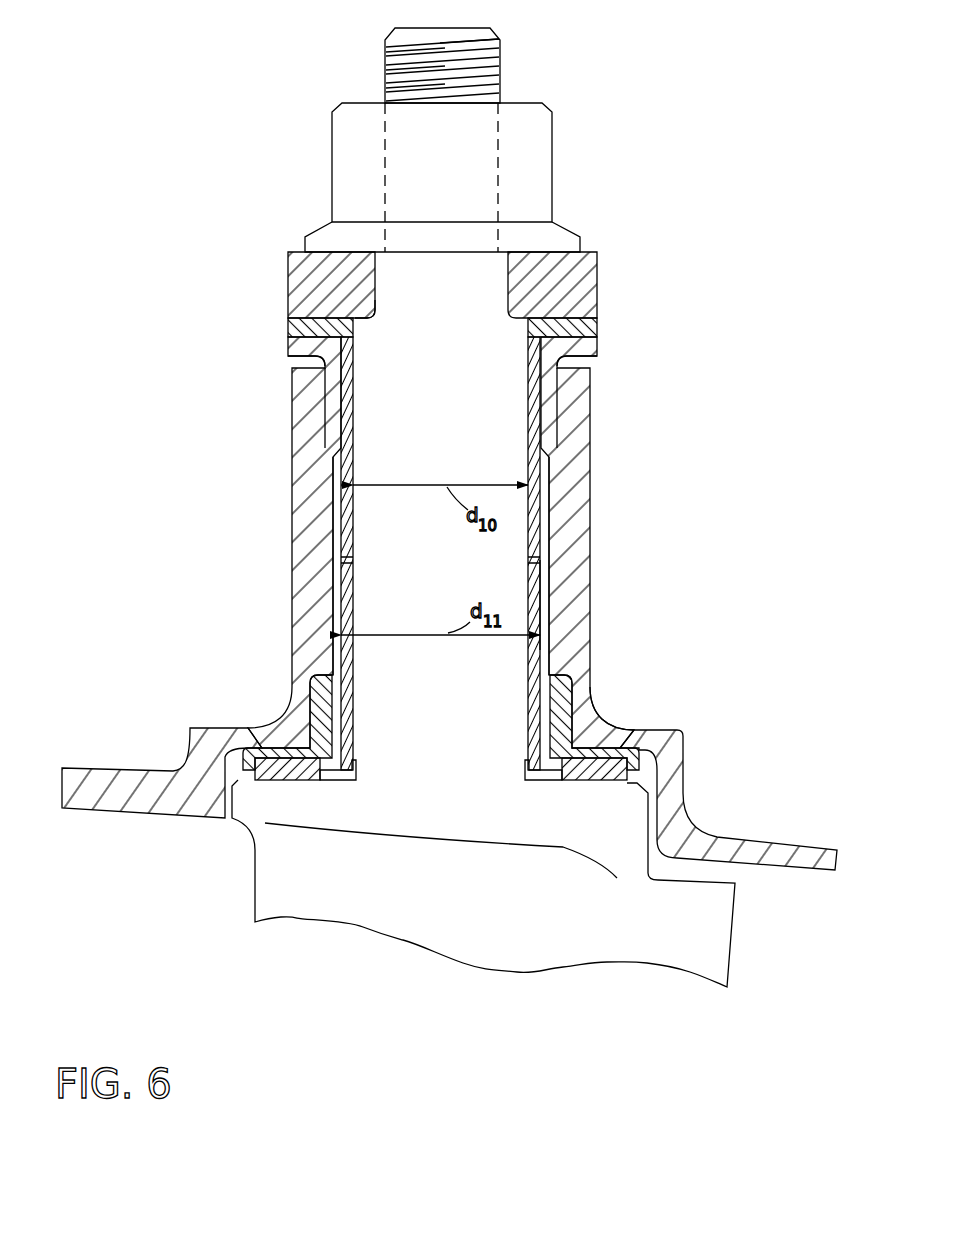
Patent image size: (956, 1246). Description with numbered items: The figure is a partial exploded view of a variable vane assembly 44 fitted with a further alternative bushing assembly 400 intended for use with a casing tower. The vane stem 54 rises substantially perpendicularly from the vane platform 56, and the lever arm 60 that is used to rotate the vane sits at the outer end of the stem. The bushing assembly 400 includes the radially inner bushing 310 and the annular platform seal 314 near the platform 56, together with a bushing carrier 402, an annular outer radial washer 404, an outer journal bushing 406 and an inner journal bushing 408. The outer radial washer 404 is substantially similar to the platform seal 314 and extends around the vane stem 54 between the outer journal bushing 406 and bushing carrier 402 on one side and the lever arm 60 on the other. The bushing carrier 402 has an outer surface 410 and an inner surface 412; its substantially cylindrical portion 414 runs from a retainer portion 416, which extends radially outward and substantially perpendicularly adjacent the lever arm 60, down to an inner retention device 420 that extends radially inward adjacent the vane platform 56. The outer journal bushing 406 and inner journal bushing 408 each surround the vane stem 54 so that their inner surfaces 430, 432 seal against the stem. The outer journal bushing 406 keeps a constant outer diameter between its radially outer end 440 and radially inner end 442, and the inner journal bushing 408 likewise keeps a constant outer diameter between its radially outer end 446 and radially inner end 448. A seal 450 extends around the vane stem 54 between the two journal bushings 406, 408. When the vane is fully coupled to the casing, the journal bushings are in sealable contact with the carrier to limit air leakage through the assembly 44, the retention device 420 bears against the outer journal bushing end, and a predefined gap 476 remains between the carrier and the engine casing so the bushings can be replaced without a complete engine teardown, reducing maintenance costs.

The variable vane assembly 44 is at (178, 172).
The lever arm 60 is at (600, 267).
The radially outer end 440 is at (345, 303).
The bushing carrier 402 is at (288, 340).
The annular outer radial washer 404 is at (582, 330).
The predefined gap 476 is at (290, 361).
The retainer portion 416 is at (598, 362).
The inner surface 430 is at (355, 385).
The vane stem 54 is at (466, 447).
The outer journal bushing 406 is at (542, 412).
The cylindrical portion 414 is at (335, 510).
The inner surface 412 is at (350, 470).
The radially outer end 446 is at (337, 547).
The seal 450 is at (556, 550).
The outer surface 410 is at (333, 576).
The radially inner end 442 is at (353, 572).
The inner journal bushing 408 is at (545, 600).
The bushing assembly 400 is at (647, 670).
The inner surface 432 is at (355, 682).
The radially inner bushing 310 is at (270, 750).
The annular platform seal 314 is at (278, 788).
The radially inner end 448 is at (333, 782).
The inner retention device 420 is at (562, 778).
The vane platform 56 is at (582, 895).